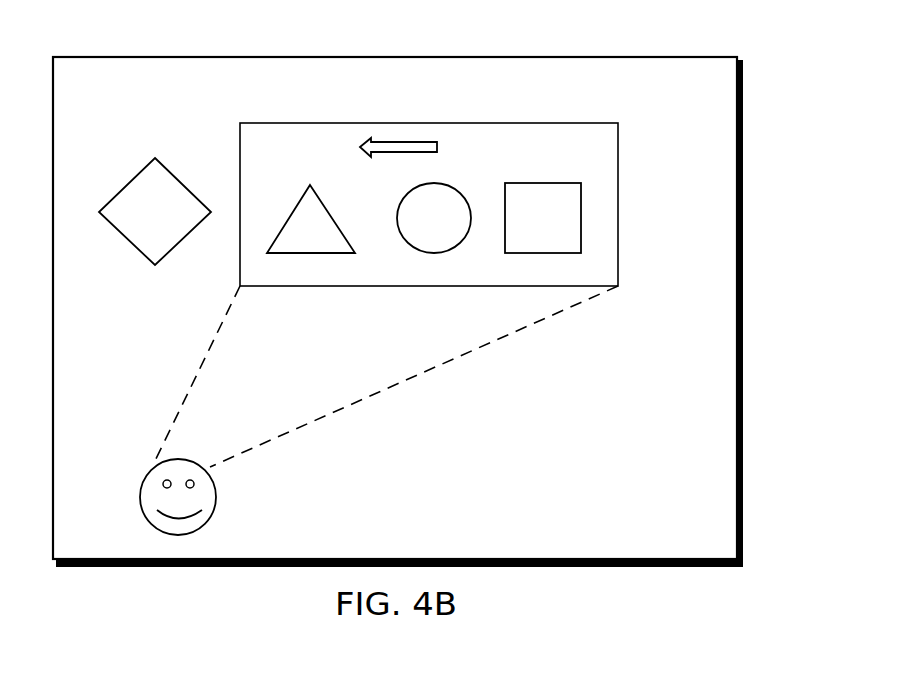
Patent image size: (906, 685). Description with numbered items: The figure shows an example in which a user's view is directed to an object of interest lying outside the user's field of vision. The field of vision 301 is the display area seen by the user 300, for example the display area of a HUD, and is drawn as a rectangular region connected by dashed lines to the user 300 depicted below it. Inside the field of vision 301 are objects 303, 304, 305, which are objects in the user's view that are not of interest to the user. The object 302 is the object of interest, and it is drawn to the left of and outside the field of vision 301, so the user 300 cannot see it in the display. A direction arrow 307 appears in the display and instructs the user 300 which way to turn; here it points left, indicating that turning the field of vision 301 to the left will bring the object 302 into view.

The user 300 is at (216, 506).
The field of vision 301 is at (324, 121).
The object 302 is at (155, 158).
The object 303 is at (326, 201).
The object 304 is at (447, 184).
The object 305 is at (544, 182).
The direction arrow 307 is at (415, 139).